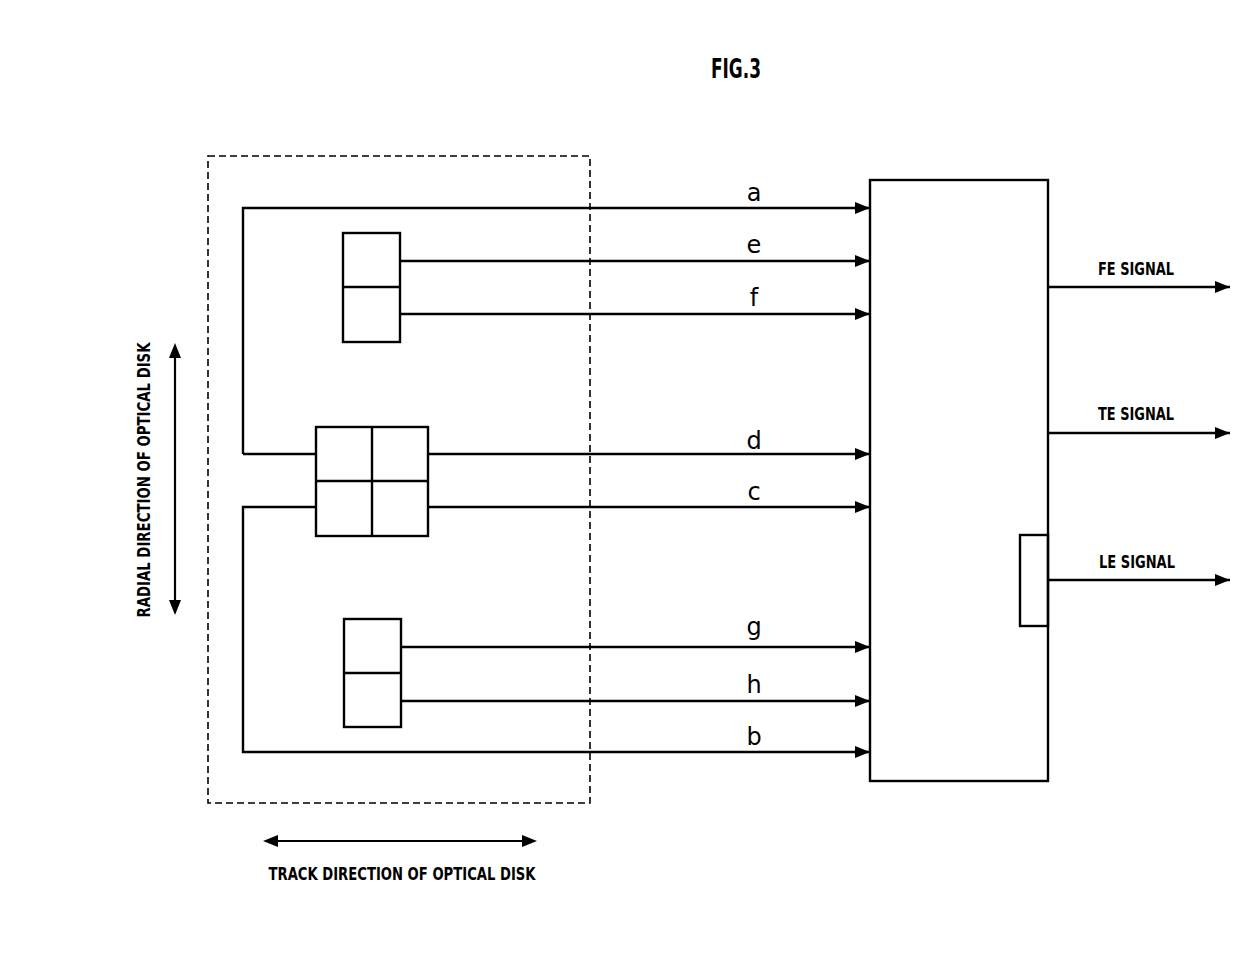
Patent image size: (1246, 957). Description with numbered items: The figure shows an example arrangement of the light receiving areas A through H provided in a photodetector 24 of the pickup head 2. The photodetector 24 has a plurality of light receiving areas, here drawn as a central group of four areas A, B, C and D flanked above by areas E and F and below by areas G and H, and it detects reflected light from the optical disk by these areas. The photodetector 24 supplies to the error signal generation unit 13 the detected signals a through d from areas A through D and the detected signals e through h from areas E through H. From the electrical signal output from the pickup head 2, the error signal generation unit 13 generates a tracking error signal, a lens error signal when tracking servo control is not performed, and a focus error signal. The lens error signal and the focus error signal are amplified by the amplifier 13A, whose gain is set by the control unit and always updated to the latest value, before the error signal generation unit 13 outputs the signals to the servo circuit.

The pickup head 2 is at (593, 803).
The photodetector 24 is at (343, 262).
The error signal generation unit 13 is at (1048, 180).
The amplifier 13A is at (1020, 592).